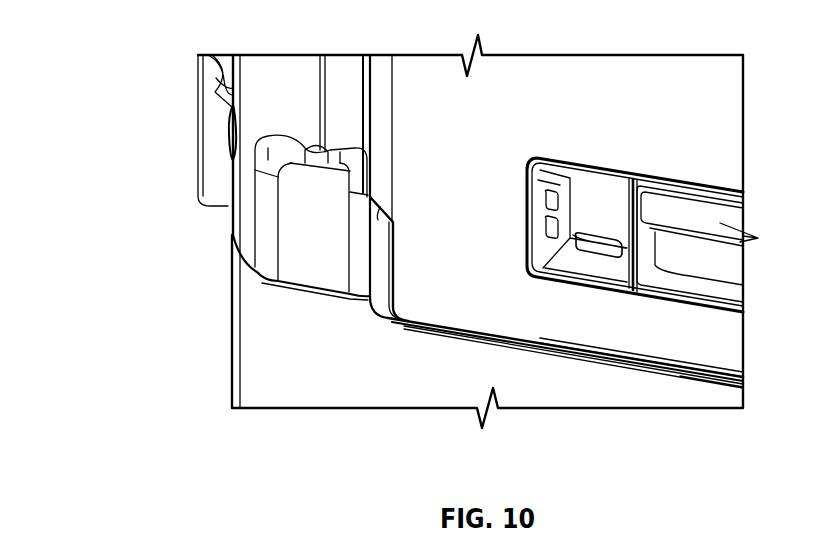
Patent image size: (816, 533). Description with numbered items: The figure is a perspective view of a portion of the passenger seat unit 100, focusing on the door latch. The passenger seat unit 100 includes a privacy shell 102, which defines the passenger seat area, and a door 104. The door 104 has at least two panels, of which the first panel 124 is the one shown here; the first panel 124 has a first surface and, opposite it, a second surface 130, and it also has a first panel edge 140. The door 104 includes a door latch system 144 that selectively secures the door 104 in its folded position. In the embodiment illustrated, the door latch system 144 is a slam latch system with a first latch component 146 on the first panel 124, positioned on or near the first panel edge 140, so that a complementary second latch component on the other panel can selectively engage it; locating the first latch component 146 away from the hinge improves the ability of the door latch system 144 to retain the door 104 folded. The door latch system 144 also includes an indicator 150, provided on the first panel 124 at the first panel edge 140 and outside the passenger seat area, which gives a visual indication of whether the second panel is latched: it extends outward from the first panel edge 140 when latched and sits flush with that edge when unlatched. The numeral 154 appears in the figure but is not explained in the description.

The electronic device 100 is at (146, 29).
The housing block 102 is at (313, 272).
The rail 104 is at (447, 313).
The ledge 124 is at (560, 312).
The lower wall 130 is at (687, 352).
The column 140 is at (382, 72).
The slot direction 144 is at (618, 436).
The window opening 146 is at (590, 196).
The lip 150 is at (377, 222).
The component 154 is at (108, 532).